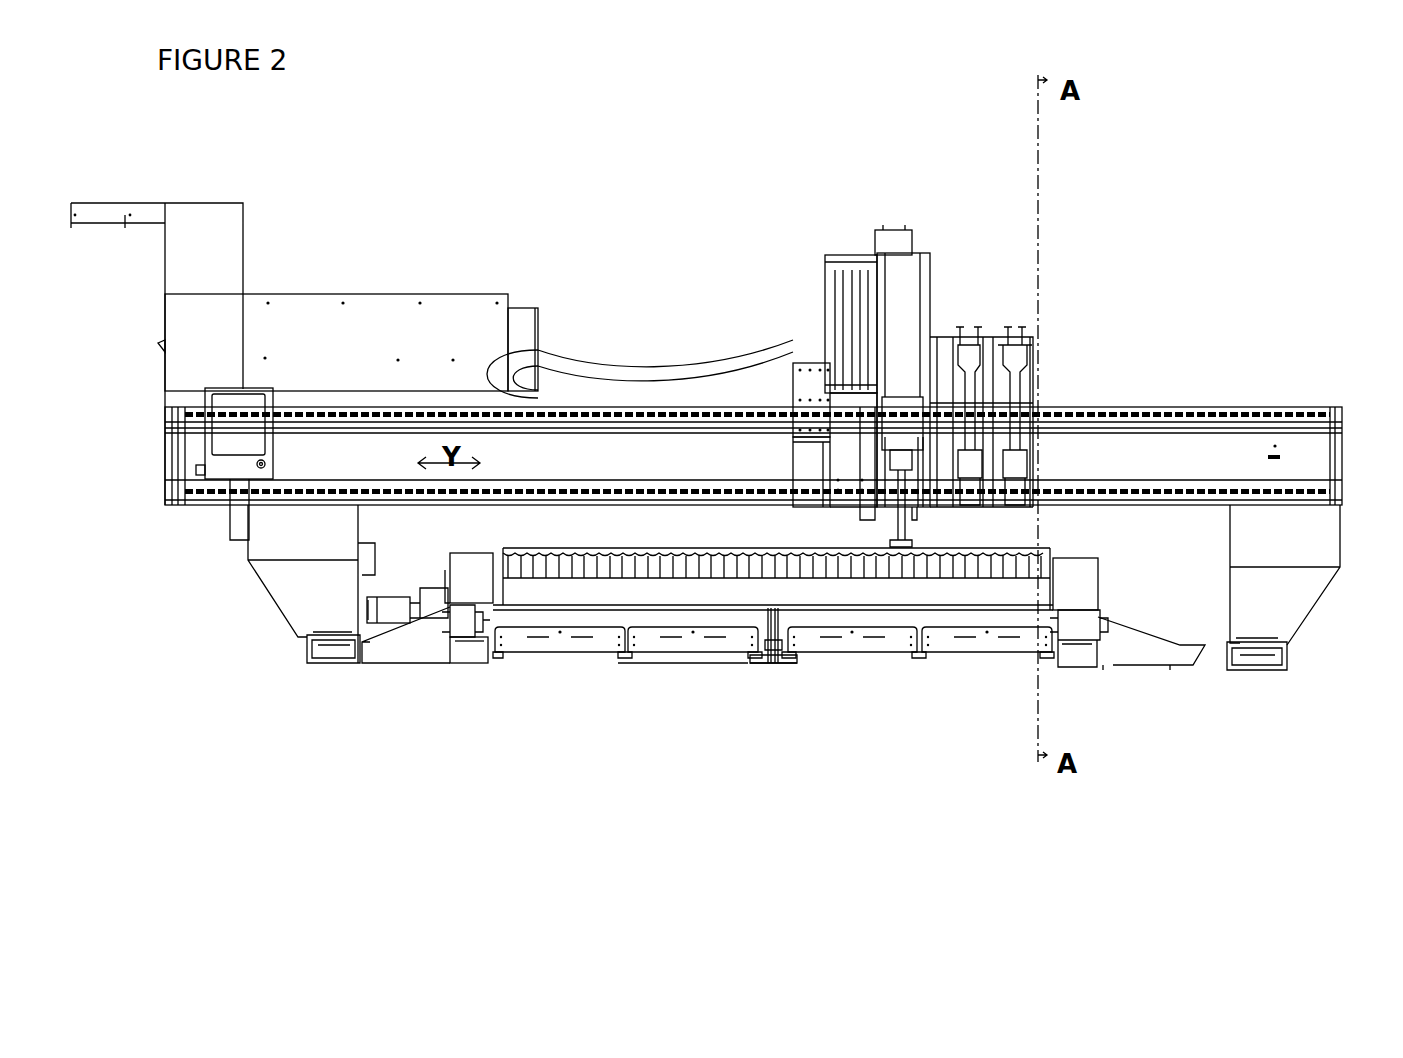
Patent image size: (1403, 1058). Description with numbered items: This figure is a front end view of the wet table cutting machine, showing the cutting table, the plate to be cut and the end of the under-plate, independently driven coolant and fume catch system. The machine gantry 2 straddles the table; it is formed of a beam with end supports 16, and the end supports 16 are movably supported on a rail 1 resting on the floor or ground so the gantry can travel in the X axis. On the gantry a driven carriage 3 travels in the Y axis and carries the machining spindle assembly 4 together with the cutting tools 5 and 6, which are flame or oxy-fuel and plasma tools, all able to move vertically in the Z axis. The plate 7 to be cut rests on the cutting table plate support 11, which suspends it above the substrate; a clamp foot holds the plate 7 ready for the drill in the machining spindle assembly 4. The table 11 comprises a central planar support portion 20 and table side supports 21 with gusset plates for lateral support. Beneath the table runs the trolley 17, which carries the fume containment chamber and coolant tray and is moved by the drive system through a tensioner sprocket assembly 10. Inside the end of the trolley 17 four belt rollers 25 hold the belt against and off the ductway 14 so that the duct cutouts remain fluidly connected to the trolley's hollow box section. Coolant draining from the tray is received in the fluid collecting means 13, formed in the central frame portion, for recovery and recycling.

The machine rails 1 is at (1257, 660).
The machine gantry 2 is at (1247, 413).
The driven carriage 3 is at (817, 383).
The machining spindle assembly 4 is at (903, 418).
The cutting tool 5 is at (1003, 407).
The cutting tool 6 is at (963, 450).
The plate to be cut 7 is at (690, 547).
The tensioner sprocket assembly 10 is at (465, 615).
The cutting table plate support 11 is at (1003, 595).
The fluid collecting means 13 is at (787, 663).
The ductway 14 is at (1082, 655).
The end supports 16 is at (1283, 542).
The trolley 17 is at (952, 618).
The central planar support portion 20 is at (770, 660).
The table side support 21 is at (1100, 648).
The belt rollers 25 is at (702, 642).